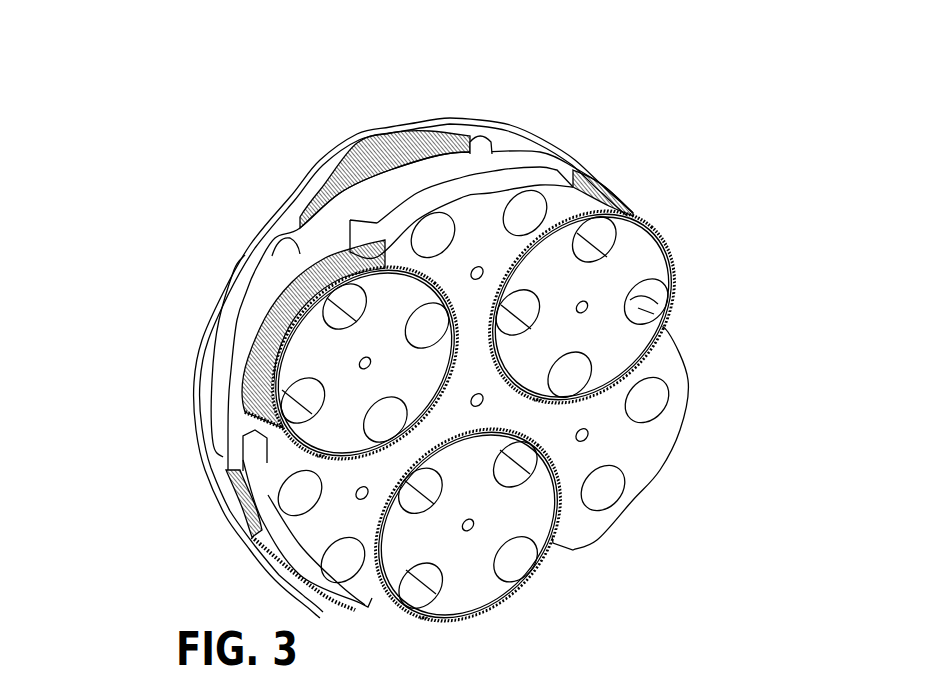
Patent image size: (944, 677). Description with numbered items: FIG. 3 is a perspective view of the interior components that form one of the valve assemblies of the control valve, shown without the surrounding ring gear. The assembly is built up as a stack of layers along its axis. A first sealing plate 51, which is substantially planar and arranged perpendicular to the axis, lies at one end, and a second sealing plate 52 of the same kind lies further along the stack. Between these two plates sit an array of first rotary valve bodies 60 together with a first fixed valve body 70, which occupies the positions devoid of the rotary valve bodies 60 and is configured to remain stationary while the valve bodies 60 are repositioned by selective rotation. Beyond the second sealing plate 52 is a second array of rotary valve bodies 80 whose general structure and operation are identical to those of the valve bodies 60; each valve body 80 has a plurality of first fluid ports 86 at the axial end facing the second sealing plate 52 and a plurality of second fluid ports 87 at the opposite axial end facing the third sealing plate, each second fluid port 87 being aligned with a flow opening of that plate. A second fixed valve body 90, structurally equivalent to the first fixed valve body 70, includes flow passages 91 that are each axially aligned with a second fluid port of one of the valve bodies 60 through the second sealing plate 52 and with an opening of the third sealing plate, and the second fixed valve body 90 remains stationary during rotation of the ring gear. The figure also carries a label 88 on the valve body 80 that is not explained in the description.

The first sealing plate 51 is at (224, 292).
The second sealing plate 52 is at (231, 381).
The first rotary valve bodies 60 is at (396, 150).
The first fixed valve body 70 is at (286, 240).
The second rotary valve bodies 80 is at (595, 307).
The first fluid ports 86 is at (645, 301).
The second fluid ports 87 is at (660, 312).
The aperture wall 88 is at (656, 314).
The second fixed valve body 90 is at (465, 387).
The flow passages 91 is at (590, 507).